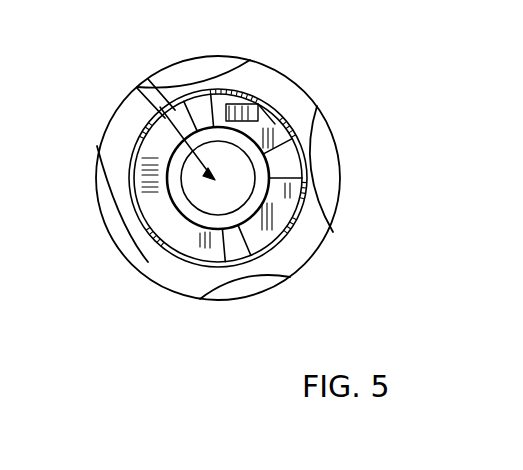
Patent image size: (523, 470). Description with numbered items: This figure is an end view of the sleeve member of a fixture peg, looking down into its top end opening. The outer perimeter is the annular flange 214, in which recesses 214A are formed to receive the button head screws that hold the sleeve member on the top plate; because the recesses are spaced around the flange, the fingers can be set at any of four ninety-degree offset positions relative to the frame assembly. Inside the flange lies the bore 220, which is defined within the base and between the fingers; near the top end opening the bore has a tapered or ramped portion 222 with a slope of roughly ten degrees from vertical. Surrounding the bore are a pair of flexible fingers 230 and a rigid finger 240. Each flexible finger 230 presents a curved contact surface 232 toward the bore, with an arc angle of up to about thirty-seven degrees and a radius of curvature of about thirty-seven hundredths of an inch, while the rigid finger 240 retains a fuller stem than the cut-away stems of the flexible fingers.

The annular flange 214 is at (334, 213).
The recesses 214A is at (337, 160).
The bore 220 is at (137, 90).
The tapered portion 222 is at (138, 86).
The flexible fingers 230 is at (255, 108).
The curved contact surface 232 is at (284, 120).
The rigid finger 240 is at (170, 233).